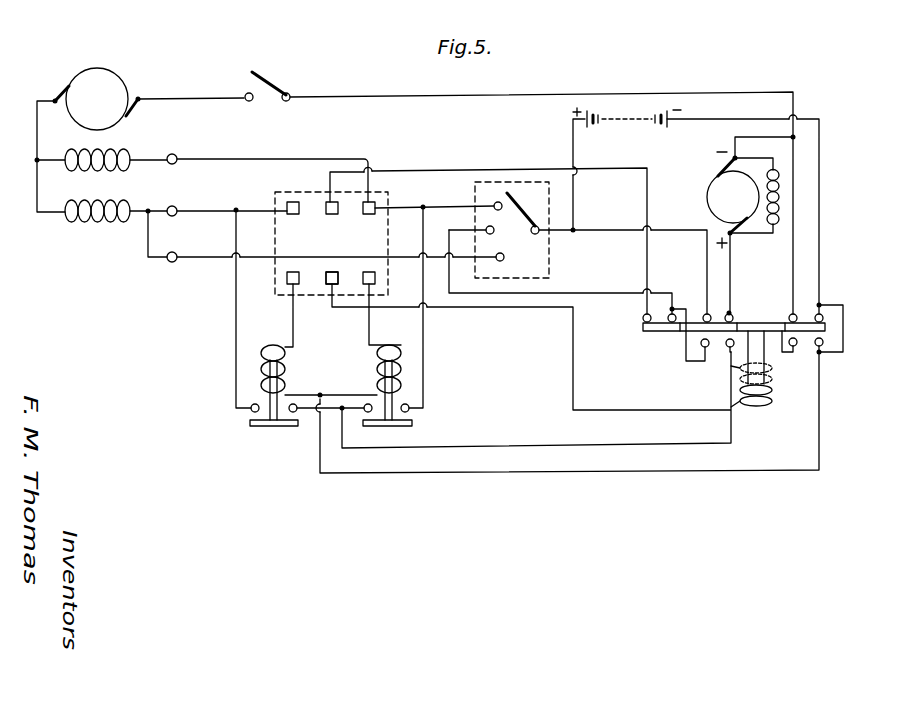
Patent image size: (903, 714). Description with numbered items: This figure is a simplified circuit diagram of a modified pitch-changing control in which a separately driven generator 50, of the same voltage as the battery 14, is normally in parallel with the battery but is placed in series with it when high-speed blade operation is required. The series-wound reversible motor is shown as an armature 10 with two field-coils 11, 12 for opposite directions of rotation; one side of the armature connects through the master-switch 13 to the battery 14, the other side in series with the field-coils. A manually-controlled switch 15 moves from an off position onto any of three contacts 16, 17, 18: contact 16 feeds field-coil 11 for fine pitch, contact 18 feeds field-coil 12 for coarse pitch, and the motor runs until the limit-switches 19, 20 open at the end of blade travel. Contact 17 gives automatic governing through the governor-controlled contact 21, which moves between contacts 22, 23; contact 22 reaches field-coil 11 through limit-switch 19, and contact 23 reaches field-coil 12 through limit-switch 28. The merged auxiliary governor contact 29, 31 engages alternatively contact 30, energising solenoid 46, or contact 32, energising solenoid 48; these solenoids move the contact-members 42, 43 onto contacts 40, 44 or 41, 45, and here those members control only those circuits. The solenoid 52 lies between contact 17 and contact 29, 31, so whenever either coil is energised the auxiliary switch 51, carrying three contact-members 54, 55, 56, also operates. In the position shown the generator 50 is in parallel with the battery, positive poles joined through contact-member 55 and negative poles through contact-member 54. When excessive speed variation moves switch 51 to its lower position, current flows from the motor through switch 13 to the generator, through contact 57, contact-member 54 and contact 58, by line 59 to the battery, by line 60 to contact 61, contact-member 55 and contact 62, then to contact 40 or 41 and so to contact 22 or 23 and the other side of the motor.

The armature 10 is at (107, 87).
The field-coil 11 is at (103, 150).
The field-coil 12 is at (97, 224).
The master-switch 13 is at (273, 85).
The battery 14 is at (641, 121).
The manually-controlled switch 15 is at (510, 190).
The contact 16 is at (497, 202).
The contact 17 is at (493, 233).
The contact 18 is at (500, 261).
The limit-switch 19 is at (176, 156).
The limit-switch 20 is at (176, 256).
The governor-controlled contact 21 is at (328, 202).
The contact 22 is at (374, 207).
The contact 23 is at (288, 202).
The limit-switch 28 is at (176, 208).
The auxiliary governor-controlled contact 29 is at (337, 272).
The contact 30 is at (270, 255).
The auxiliary governor-controlled contact 31 is at (332, 278).
The contact 32 is at (372, 272).
The contact 40 is at (367, 404).
The contact 41 is at (295, 404).
The contact-member 42 is at (404, 426).
The contact-member 43 is at (268, 427).
The contact 44 is at (410, 406).
The contact 45 is at (250, 410).
The solenoid 46 is at (262, 363).
The solenoid 48 is at (401, 360).
The generator 50 is at (718, 187).
The auxiliary switch 51 is at (760, 357).
The solenoid 52 is at (773, 393).
The contact-member 54 is at (807, 323).
The contact-member 55 is at (718, 323).
The contact-member 56 is at (660, 331).
The contact 57 is at (797, 345).
The contact 58 is at (824, 342).
The line 59 is at (844, 310).
The line 60 is at (597, 230).
The contact 61 is at (702, 347).
The contact 62 is at (728, 348).